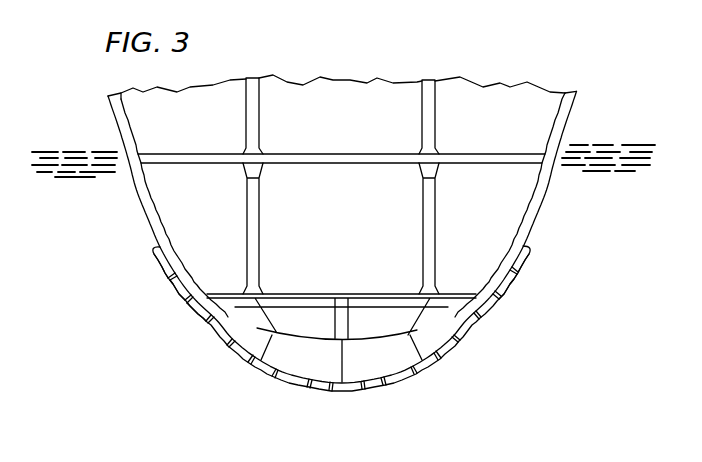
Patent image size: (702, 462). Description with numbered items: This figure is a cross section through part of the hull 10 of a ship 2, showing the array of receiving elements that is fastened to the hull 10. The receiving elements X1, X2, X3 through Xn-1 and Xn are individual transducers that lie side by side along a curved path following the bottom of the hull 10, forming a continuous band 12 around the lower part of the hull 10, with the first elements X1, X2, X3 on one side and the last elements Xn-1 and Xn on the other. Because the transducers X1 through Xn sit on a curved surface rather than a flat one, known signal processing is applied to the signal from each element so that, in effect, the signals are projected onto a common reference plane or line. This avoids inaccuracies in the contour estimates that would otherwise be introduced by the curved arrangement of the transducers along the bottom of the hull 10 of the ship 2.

The ship 2 is at (106, 190).
The hull 10 is at (565, 138).
The transducer array 12 is at (330, 394).
The receiving element X1 is at (167, 270).
The receiving element X2 is at (184, 297).
The receiving element X3 is at (201, 318).
The receiving element Xn is at (513, 267).
The receiving element Xn-1 is at (498, 288).